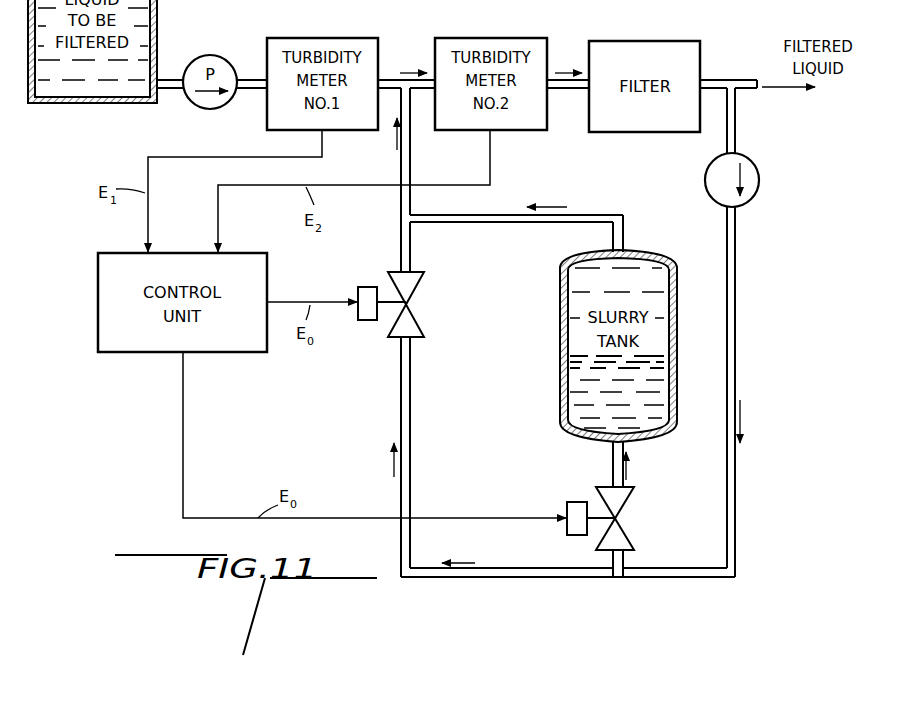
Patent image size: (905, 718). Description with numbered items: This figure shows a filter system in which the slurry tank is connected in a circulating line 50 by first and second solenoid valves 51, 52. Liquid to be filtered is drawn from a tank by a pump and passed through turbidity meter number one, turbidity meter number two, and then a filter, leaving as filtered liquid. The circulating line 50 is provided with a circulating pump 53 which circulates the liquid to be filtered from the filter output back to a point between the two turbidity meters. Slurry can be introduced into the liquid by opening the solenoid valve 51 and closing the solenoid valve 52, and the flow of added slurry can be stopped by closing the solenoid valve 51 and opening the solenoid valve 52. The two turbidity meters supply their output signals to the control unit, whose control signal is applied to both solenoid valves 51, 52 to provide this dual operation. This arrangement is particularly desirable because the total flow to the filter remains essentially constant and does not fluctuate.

The circulating line 50 is at (735, 327).
The first solenoid valve 51 is at (630, 537).
The second solenoid valve 52 is at (424, 331).
The circulating pump 53 is at (753, 192).